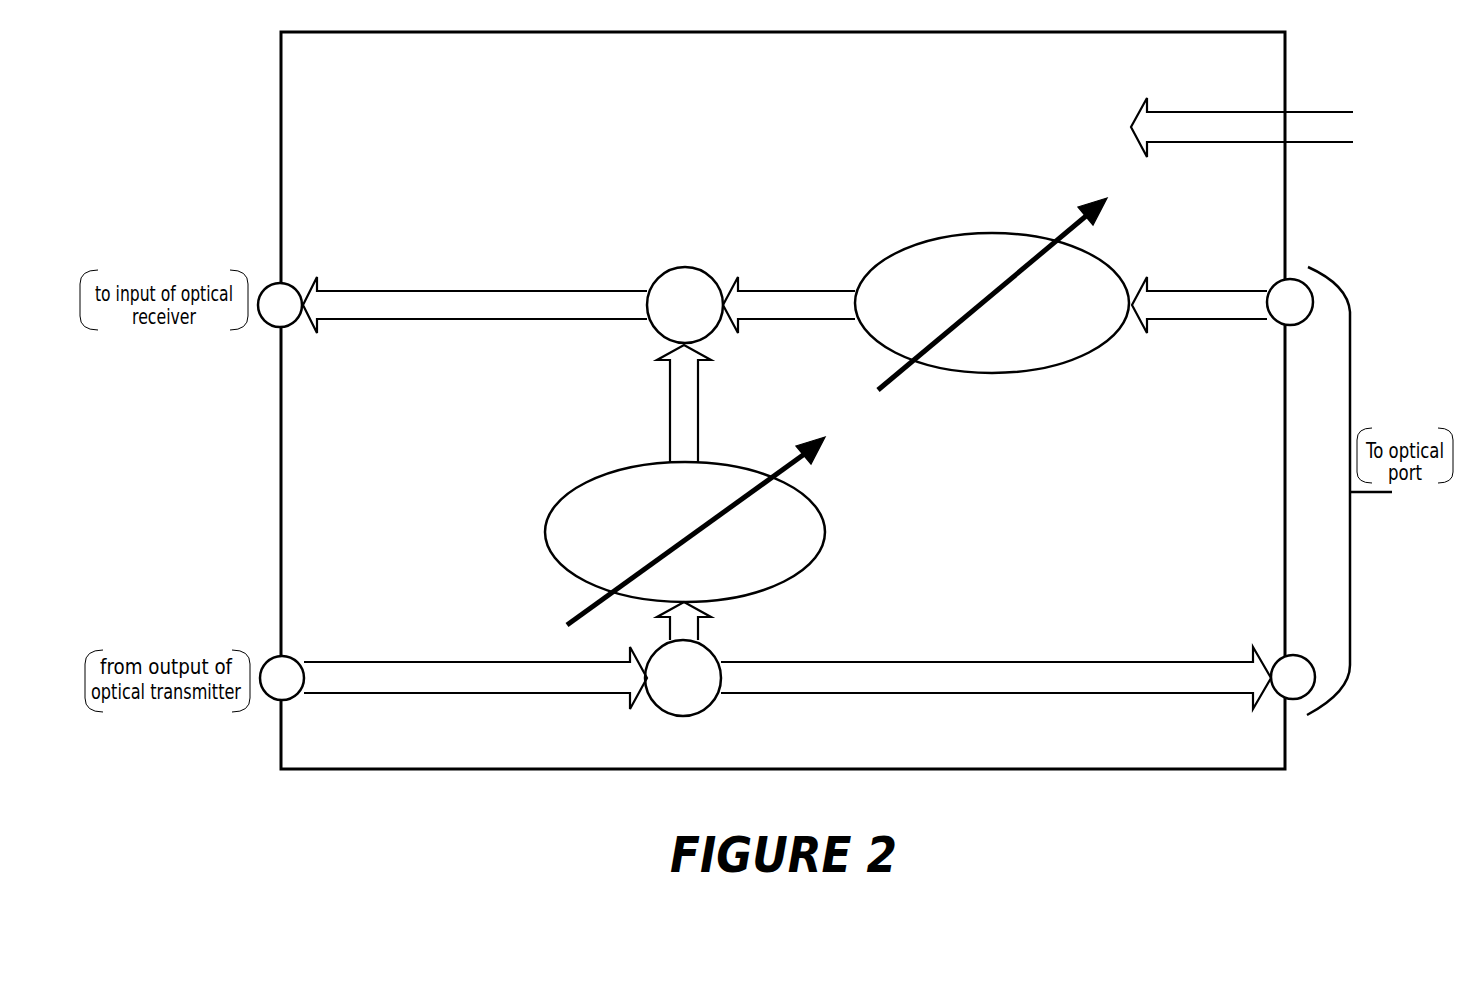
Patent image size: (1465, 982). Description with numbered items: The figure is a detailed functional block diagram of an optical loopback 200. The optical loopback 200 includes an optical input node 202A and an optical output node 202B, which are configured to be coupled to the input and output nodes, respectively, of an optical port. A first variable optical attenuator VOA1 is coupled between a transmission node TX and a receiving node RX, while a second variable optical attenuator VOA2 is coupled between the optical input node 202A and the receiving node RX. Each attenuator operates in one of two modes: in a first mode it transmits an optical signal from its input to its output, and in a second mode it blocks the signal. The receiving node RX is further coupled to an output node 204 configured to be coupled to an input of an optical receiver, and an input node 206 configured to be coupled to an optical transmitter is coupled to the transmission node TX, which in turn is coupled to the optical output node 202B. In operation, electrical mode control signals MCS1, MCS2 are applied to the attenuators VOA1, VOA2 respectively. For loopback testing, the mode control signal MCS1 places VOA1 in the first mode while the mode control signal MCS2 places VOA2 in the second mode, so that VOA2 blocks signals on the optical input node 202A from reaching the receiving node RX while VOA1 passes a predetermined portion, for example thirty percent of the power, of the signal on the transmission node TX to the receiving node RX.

The optical loopback 200 is at (792, 111).
The optical input node 202A is at (1300, 325).
The optical output node 202B is at (1310, 660).
The output node 204 is at (286, 283).
The input node 206 is at (290, 657).
The first variable optical attenuator VOA1 is at (825, 530).
The second variable optical attenuator VOA2 is at (1000, 372).
The mode control signal MCS1 is at (545, 533).
The mode control signal MCS2 is at (989, 233).
The receiving node RX is at (685, 305).
The transmission node TX is at (683, 678).